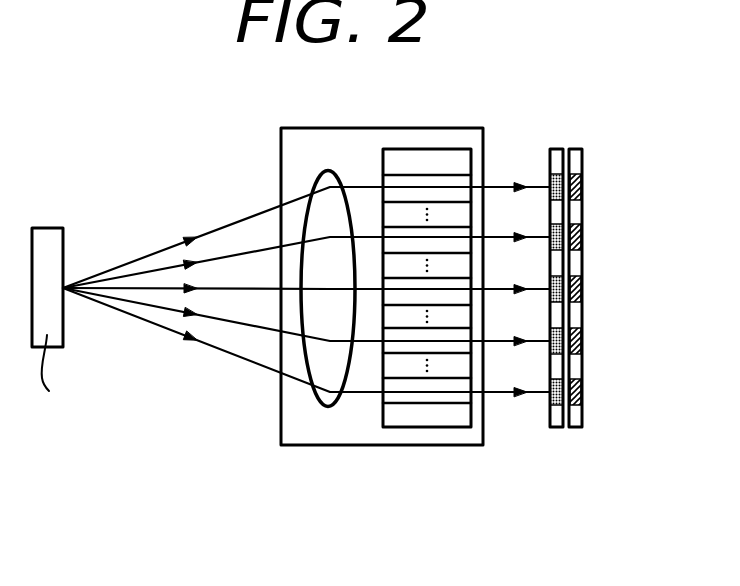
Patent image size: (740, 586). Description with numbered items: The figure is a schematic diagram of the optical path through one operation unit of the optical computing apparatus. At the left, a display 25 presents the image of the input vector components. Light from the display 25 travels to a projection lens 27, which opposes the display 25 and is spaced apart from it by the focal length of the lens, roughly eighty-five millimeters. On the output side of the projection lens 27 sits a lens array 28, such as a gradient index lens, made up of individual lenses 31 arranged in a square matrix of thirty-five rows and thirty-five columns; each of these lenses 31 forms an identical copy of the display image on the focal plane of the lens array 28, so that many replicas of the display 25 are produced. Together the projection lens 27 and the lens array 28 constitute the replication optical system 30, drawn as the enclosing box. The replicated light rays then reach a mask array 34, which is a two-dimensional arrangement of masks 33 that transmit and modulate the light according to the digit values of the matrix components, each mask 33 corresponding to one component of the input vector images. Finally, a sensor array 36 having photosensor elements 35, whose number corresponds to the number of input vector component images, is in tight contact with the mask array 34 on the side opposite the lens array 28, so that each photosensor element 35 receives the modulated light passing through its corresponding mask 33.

The display 25 is at (45, 228).
The projection lens 27 is at (318, 193).
The lens array 28 is at (421, 428).
The replication optical system 30 is at (332, 128).
The lenses 31 is at (433, 241).
The masks 33 is at (552, 347).
The mask array 34 is at (543, 289).
The photosensor elements 35 is at (600, 289).
The sensor array 36 is at (600, 280).